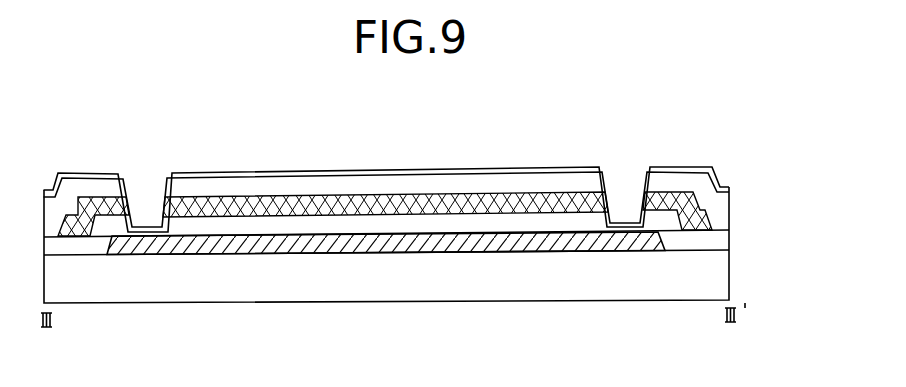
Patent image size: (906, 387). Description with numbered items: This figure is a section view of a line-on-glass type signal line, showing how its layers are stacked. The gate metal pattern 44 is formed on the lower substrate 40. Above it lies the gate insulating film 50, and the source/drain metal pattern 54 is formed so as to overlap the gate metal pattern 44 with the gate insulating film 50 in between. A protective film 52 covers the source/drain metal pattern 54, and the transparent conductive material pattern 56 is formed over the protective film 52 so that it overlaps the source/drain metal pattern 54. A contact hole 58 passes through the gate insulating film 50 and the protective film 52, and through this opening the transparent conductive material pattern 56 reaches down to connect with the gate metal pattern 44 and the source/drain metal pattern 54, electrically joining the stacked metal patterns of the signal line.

The lower substrate 40 is at (727, 280).
The gate metal pattern 44 is at (410, 250).
The gate insulating film 50 is at (726, 243).
The protective film 52 is at (725, 198).
The source/drain metal pattern 54 is at (726, 218).
The transparent conductive material pattern 56 is at (719, 186).
The contact hole 58 is at (146, 193).